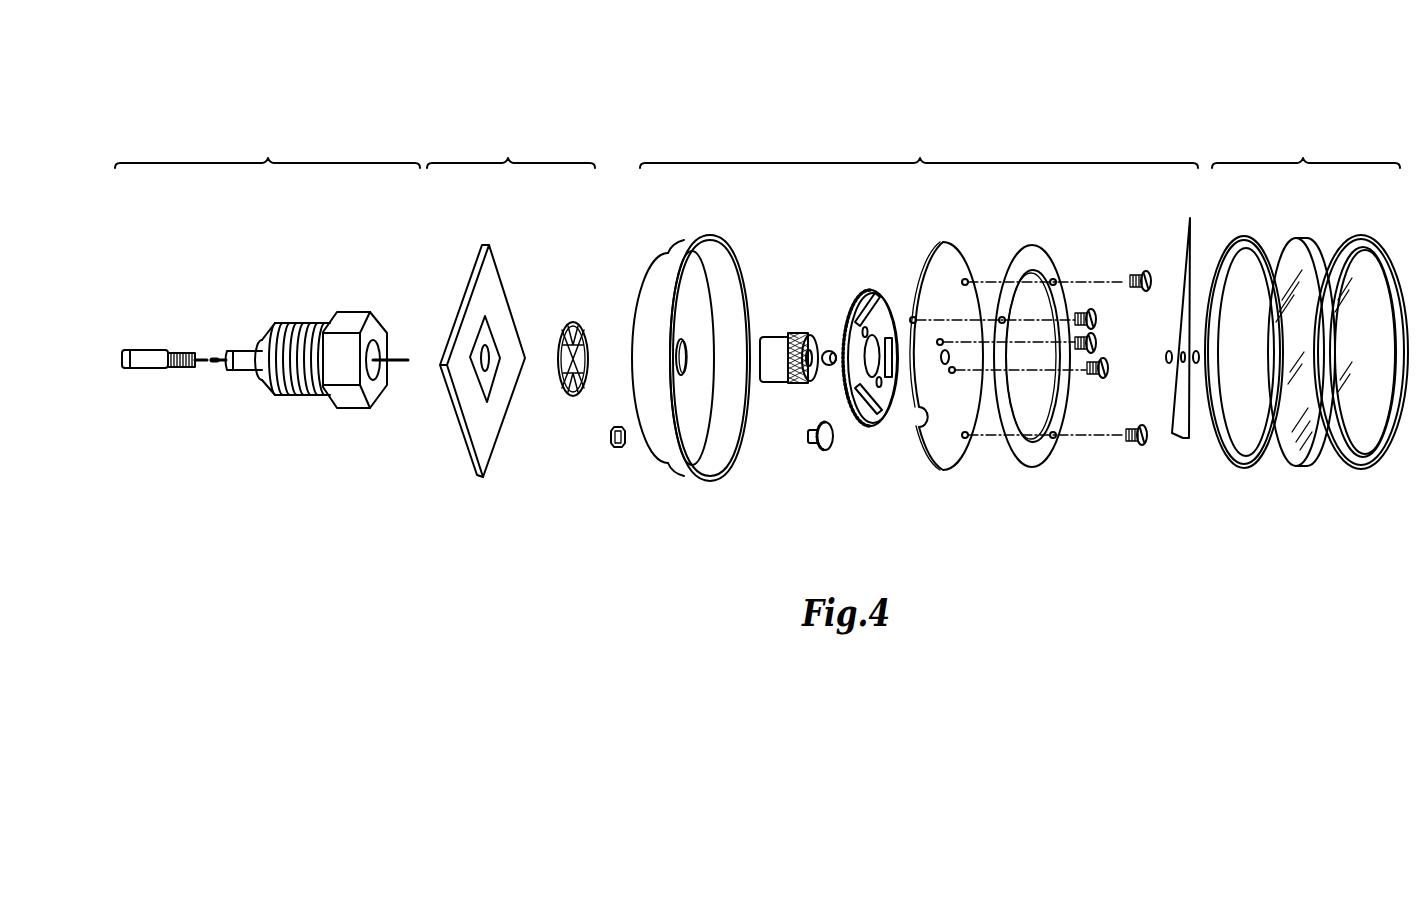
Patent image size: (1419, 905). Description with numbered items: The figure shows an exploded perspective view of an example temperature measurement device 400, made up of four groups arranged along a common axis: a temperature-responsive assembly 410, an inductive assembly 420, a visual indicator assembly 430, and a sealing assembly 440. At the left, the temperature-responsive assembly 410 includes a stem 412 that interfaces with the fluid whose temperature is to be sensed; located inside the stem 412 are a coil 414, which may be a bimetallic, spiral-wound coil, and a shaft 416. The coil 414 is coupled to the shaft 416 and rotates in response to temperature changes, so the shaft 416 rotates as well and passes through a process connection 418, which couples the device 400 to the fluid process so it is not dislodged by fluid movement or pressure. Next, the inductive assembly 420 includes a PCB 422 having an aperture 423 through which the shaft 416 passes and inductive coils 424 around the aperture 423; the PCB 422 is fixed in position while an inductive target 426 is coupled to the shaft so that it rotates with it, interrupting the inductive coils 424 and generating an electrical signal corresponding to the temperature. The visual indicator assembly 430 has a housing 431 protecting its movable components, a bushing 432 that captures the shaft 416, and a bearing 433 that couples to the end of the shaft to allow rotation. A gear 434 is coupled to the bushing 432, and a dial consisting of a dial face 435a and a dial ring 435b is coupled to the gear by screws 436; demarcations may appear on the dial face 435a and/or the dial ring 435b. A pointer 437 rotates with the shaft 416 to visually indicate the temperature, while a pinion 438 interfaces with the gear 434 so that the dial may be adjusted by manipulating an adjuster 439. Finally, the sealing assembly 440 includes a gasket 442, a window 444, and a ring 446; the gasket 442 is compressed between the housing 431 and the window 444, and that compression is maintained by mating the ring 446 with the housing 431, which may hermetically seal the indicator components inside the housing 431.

The temperature measurement device 400 is at (1104, 108).
The temperature-responsive assembly 410 is at (267, 149).
The stem 412 is at (128, 370).
The coil 414 is at (181, 352).
The shaft 416 is at (205, 364).
The process connection 418 is at (350, 312).
The inductive assembly 420 is at (511, 149).
The PCB 422 is at (490, 262).
The aperture 423 is at (490, 354).
The inductive coils 424 is at (490, 392).
The inductive target 426 is at (572, 322).
The visual indicator assembly 430 is at (919, 149).
The housing 431 is at (700, 482).
The bushing 432 is at (771, 382).
The bearing 433 is at (827, 350).
The gear 434 is at (866, 292).
The dial face 435a is at (945, 470).
The dial ring 435b is at (1032, 468).
The screws 436 is at (1131, 266).
The pointer 437 is at (1188, 440).
The pinion 438 is at (826, 452).
The adjuster 439 is at (620, 448).
The sealing assembly 440 is at (1306, 149).
The gasket 442 is at (1244, 468).
The window 444 is at (1300, 466).
The ring 446 is at (1358, 468).